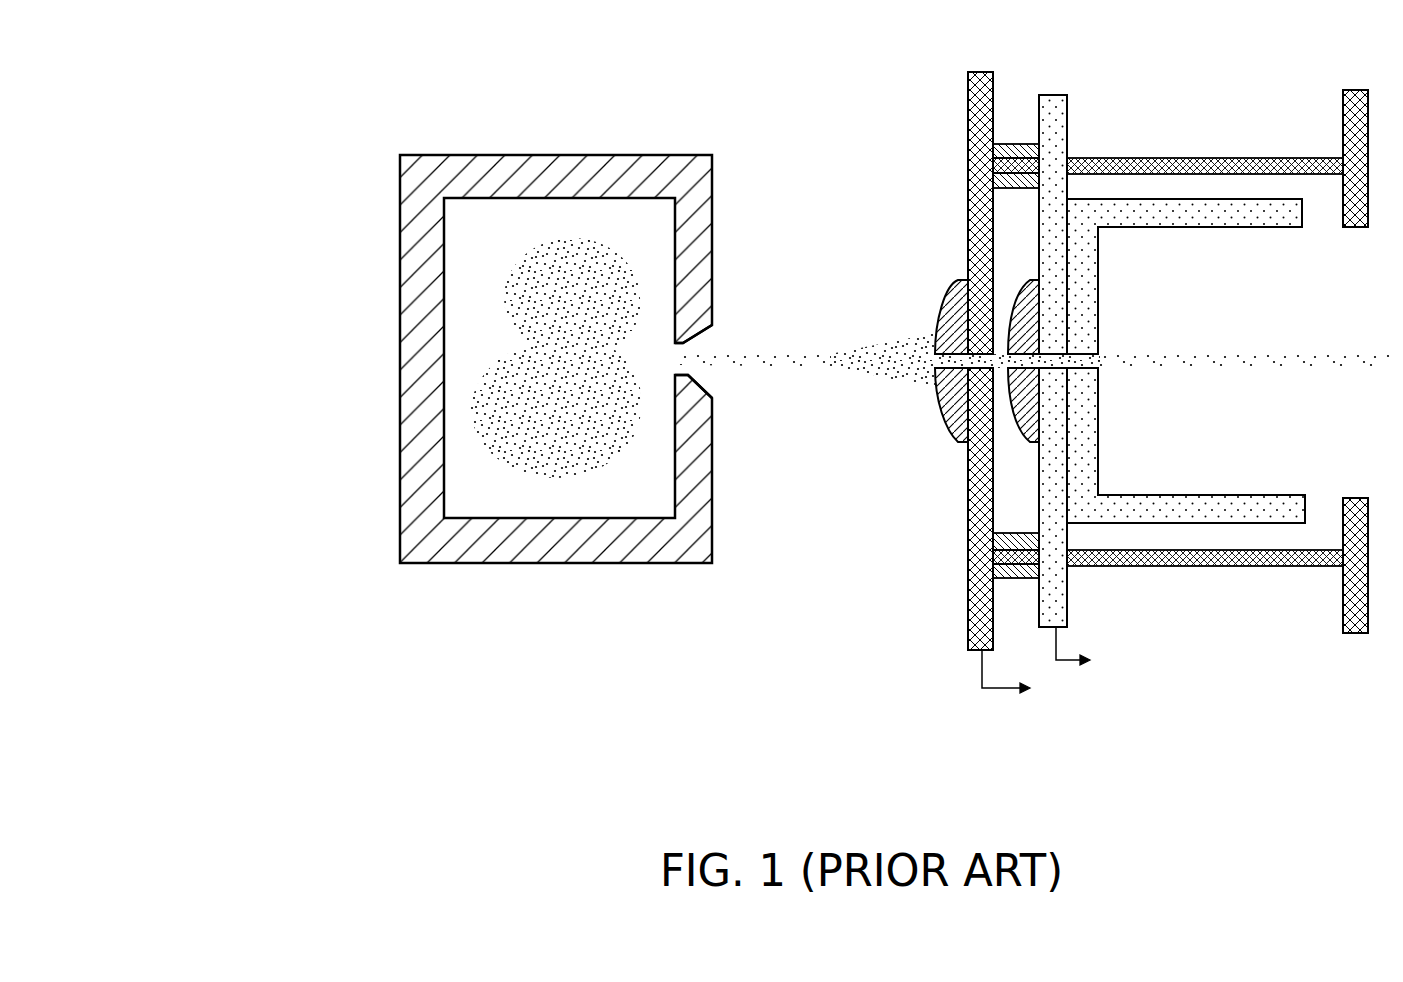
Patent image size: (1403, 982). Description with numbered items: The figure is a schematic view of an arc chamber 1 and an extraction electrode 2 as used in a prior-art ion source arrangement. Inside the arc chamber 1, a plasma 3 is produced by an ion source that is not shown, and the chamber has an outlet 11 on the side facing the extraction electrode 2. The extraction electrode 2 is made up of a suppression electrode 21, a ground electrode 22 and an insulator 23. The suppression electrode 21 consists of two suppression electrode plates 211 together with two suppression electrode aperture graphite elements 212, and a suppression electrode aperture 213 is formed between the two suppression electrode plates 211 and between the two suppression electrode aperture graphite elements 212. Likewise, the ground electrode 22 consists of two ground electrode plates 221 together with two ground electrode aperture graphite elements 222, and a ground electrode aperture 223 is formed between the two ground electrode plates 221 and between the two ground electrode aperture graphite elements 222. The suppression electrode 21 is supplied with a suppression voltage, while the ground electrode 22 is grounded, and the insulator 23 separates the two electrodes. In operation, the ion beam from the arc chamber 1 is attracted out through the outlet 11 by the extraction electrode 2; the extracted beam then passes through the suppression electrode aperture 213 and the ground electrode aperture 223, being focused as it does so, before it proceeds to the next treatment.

The arc chamber 1 is at (571, 564).
The outlet 11 is at (710, 342).
The plasma 3 is at (545, 407).
The extraction electrode 2 is at (1218, 773).
The suppression electrode 21 is at (820, 87).
The suppression electrode plates 211 is at (968, 114).
The suppression electrode aperture graphite elements 212 is at (953, 318).
The suppression electrode aperture 213 is at (935, 366).
The ground electrode 22 is at (1222, 63).
The ground electrode plates 221 is at (1058, 118).
The ground electrode aperture graphite elements 222 is at (1073, 257).
The ground electrode aperture 223 is at (953, 417).
The insulator 23 is at (1017, 150).